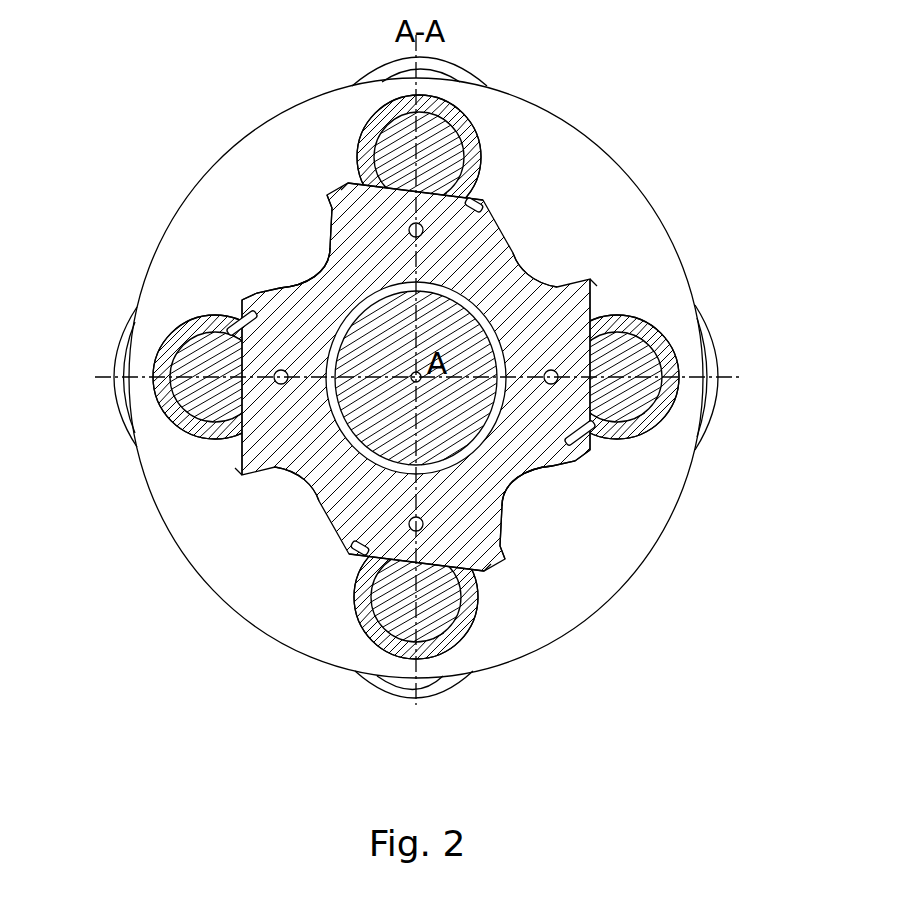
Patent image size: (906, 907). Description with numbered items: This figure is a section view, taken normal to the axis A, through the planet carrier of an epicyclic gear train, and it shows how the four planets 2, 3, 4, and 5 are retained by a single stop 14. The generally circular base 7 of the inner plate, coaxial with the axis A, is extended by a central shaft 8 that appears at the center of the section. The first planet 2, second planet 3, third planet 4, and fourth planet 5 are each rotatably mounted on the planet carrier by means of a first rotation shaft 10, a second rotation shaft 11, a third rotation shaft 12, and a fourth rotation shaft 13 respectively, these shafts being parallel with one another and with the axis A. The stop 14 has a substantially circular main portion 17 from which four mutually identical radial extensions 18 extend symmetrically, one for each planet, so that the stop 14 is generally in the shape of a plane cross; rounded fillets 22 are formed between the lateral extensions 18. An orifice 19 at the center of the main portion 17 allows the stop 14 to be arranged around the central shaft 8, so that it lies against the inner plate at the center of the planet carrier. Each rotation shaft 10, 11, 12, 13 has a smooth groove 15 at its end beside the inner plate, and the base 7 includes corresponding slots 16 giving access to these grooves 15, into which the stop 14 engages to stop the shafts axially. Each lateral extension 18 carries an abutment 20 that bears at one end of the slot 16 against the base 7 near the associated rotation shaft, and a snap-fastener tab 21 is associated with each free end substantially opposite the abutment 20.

The first planet 2 is at (394, 70).
The second planet 3 is at (714, 360).
The third planet 4 is at (450, 688).
The fourth planet 5 is at (125, 410).
The base 7 is at (600, 172).
The central shaft 8 is at (402, 412).
The first rotation shaft 10 is at (425, 145).
The second rotation shaft 11 is at (640, 387).
The third rotation shaft 12 is at (400, 572).
The fourth rotation shaft 13 is at (161, 351).
The stop 14 is at (376, 250).
The groove 15 is at (428, 188).
The slot 16 is at (366, 130).
The main portion 17 is at (335, 303).
The radial extension 18 is at (357, 240).
The orifice 19 is at (500, 508).
The abutment 20 is at (345, 180).
The snap-fastener tab 21 is at (480, 200).
The rounded fillet 22 is at (310, 283).